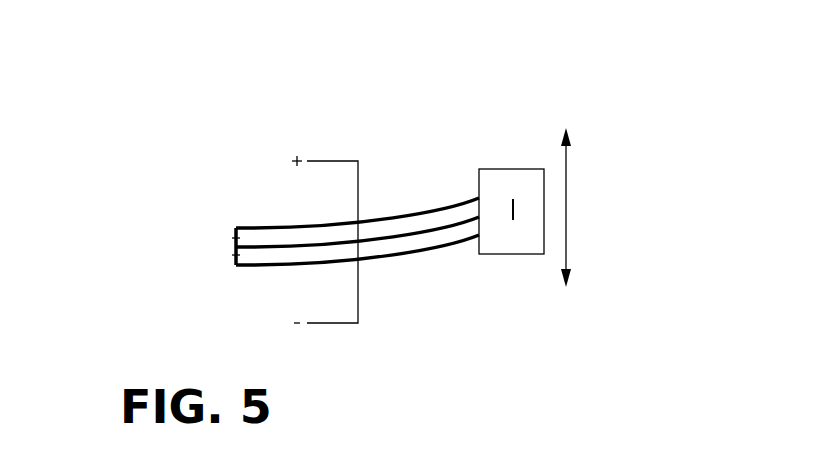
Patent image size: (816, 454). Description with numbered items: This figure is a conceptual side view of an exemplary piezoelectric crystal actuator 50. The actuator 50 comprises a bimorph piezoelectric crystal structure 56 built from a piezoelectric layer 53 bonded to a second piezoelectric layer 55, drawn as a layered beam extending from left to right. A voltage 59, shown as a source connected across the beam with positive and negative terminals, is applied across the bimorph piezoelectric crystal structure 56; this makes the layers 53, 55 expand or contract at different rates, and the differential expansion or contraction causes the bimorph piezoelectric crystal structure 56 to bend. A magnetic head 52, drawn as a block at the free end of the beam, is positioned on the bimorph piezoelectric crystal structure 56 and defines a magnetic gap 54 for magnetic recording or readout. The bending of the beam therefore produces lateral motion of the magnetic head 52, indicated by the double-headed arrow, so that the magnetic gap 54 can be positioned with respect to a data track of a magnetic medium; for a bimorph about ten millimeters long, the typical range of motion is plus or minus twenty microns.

The piezoelectric crystal actuator 50 is at (460, 77).
The magnetic head 52 is at (517, 254).
The piezoelectric layer 53 is at (232, 238).
The magnetic gap 54 is at (513, 210).
The second piezoelectric layer 55 is at (232, 255).
The bimorph piezoelectric crystal structure 56 is at (255, 200).
The voltage 59 is at (300, 142).